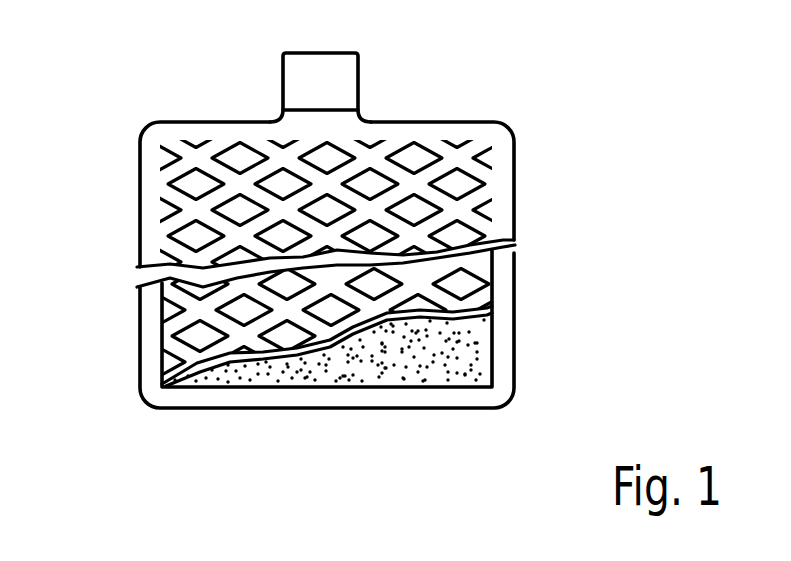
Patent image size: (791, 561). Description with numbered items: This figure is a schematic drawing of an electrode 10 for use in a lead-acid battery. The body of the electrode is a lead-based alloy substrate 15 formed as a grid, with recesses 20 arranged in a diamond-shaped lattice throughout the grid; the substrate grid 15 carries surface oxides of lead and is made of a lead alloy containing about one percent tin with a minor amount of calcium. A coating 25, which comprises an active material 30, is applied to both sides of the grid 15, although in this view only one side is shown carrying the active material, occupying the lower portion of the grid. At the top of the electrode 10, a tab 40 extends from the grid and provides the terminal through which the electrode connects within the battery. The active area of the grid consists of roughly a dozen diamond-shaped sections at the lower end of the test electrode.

The electrode 10 is at (130, 247).
The lead-based alloy substrate 15 is at (476, 161).
The recesses 20 is at (233, 160).
The coating 25 is at (405, 346).
The active material 30 is at (463, 350).
The tab 40 is at (340, 85).